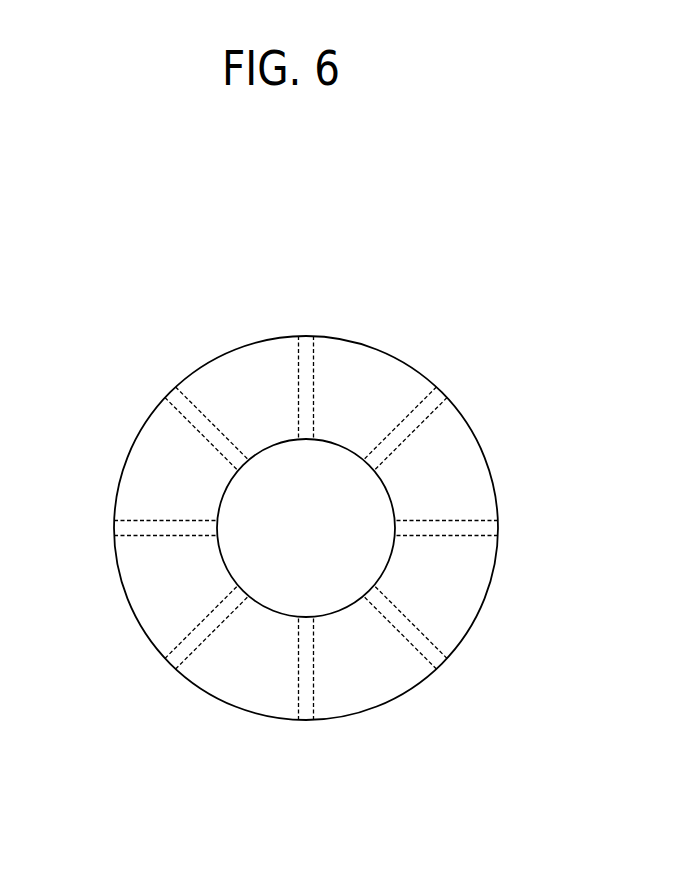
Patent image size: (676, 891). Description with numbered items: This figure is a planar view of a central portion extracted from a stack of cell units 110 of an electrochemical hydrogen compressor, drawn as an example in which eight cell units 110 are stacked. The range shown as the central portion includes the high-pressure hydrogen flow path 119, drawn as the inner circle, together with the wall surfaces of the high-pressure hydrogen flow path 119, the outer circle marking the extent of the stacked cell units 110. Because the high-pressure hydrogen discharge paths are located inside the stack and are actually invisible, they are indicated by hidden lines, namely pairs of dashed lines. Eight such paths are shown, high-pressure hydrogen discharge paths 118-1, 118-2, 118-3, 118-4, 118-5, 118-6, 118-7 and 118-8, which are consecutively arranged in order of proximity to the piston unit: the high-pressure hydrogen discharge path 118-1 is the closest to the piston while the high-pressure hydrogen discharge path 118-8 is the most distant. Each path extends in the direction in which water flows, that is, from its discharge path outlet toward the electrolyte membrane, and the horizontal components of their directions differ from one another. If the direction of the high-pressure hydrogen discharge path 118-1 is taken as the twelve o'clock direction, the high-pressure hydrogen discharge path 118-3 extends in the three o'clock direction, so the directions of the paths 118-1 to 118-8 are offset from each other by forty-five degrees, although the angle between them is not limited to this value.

The cell unit 110 is at (133, 478).
The high-pressure hydrogen flow path 119 is at (224, 540).
The high-pressure hydrogen discharge path 118-1 is at (306, 343).
The high-pressure hydrogen discharge path 118-2 is at (441, 392).
The high-pressure hydrogen discharge path 118-3 is at (497, 532).
The high-pressure hydrogen discharge path 118-4 is at (442, 664).
The high-pressure hydrogen discharge path 118-5 is at (307, 719).
The high-pressure hydrogen discharge path 118-6 is at (171, 664).
The high-pressure hydrogen discharge path 118-7 is at (116, 532).
The high-pressure hydrogen discharge path 118-8 is at (171, 393).